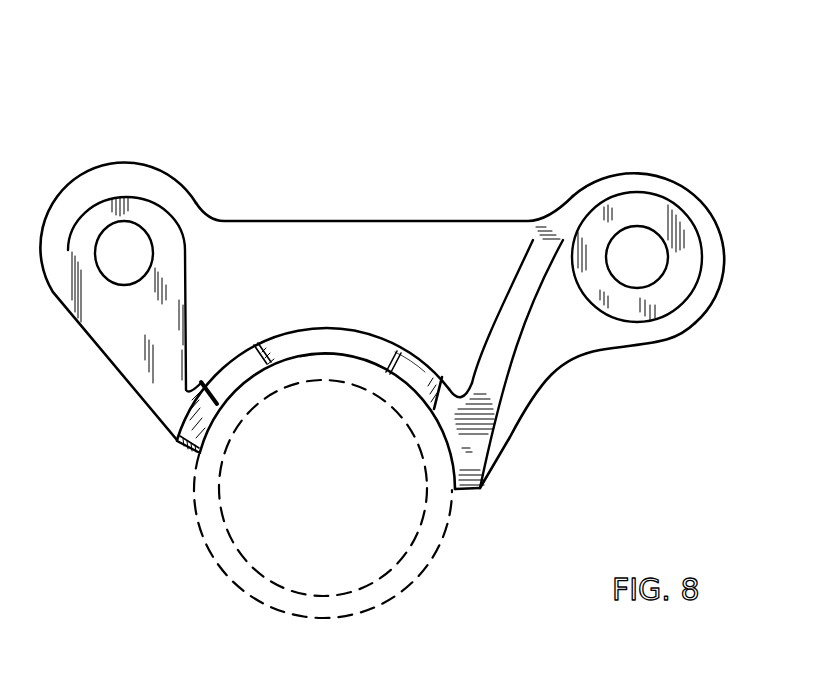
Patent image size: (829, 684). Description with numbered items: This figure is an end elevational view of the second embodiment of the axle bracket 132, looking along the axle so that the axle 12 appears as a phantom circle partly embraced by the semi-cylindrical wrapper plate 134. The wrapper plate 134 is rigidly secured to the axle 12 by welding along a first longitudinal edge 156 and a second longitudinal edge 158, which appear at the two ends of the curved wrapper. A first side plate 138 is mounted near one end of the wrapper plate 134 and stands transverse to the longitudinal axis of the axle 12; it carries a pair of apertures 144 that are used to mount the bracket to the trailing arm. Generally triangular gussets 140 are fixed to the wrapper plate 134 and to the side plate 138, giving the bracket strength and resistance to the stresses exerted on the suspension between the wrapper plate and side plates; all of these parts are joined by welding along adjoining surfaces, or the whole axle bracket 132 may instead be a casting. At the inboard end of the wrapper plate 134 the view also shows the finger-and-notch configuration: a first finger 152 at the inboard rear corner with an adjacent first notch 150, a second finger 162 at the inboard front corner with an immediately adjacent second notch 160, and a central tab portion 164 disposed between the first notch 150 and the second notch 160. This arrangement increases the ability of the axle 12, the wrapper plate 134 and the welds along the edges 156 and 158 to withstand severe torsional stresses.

The axle 12 is at (381, 600).
The axle bracket 132 is at (662, 365).
The semi-cylindrical wrapper plate 134 is at (364, 330).
The first side plate 138 is at (395, 242).
The gussets 140 is at (493, 362).
The apertures 144 is at (130, 237).
The first notch 150 is at (232, 361).
The first finger 152 is at (200, 416).
The first longitudinal edge 156 is at (187, 443).
The second longitudinal edge 158 is at (465, 490).
The second notch 160 is at (418, 372).
The second finger 162 is at (456, 412).
The central tab portion 164 is at (333, 338).